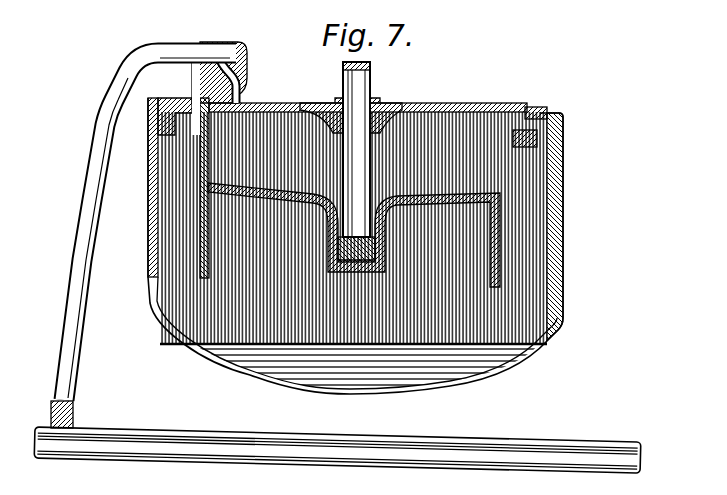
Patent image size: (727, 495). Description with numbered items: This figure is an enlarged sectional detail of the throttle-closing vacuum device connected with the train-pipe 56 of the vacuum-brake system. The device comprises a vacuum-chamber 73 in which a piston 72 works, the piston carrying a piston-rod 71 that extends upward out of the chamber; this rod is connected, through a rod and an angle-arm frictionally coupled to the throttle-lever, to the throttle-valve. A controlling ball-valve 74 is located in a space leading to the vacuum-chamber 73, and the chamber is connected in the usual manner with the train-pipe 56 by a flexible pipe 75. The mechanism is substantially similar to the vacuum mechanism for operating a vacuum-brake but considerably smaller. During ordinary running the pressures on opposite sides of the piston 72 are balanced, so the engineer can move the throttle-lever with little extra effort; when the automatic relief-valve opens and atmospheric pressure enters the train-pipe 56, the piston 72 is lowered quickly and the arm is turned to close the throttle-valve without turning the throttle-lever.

The train-pipe 56 is at (260, 420).
The piston-rod 71 is at (371, 83).
The piston 72 is at (411, 198).
The vacuum-chamber 73 is at (557, 238).
The controlling ball-valve 74 is at (236, 36).
The flexible pipe 75 is at (91, 249).